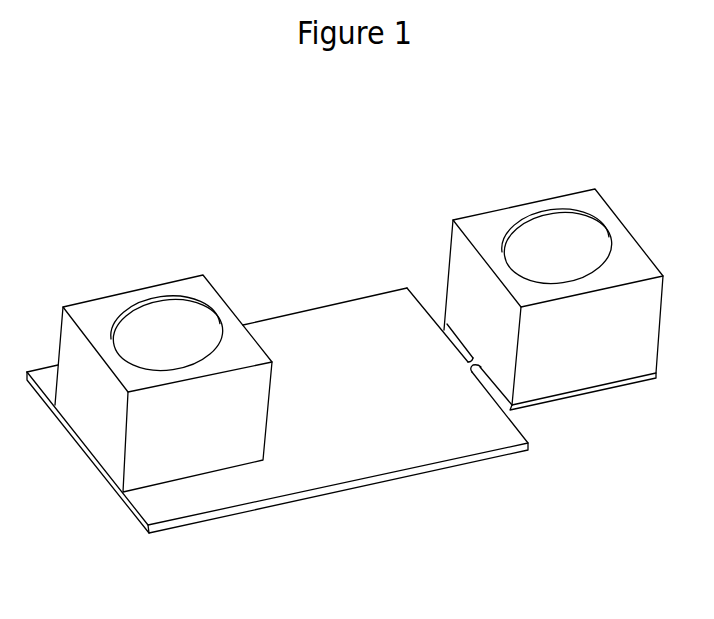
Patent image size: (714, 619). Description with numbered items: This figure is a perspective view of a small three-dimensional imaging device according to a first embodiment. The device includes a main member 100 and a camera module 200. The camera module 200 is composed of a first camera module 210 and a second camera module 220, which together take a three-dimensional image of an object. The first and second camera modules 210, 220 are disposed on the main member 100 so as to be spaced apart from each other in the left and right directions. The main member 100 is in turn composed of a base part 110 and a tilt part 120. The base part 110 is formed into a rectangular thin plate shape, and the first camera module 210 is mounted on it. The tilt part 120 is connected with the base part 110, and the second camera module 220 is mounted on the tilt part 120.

The main member 100 is at (348, 426).
The base part 110 is at (353, 457).
The tilt part 120 is at (552, 406).
The camera module 200 is at (359, 294).
The first camera module 210 is at (155, 322).
The second camera module 220 is at (553, 259).